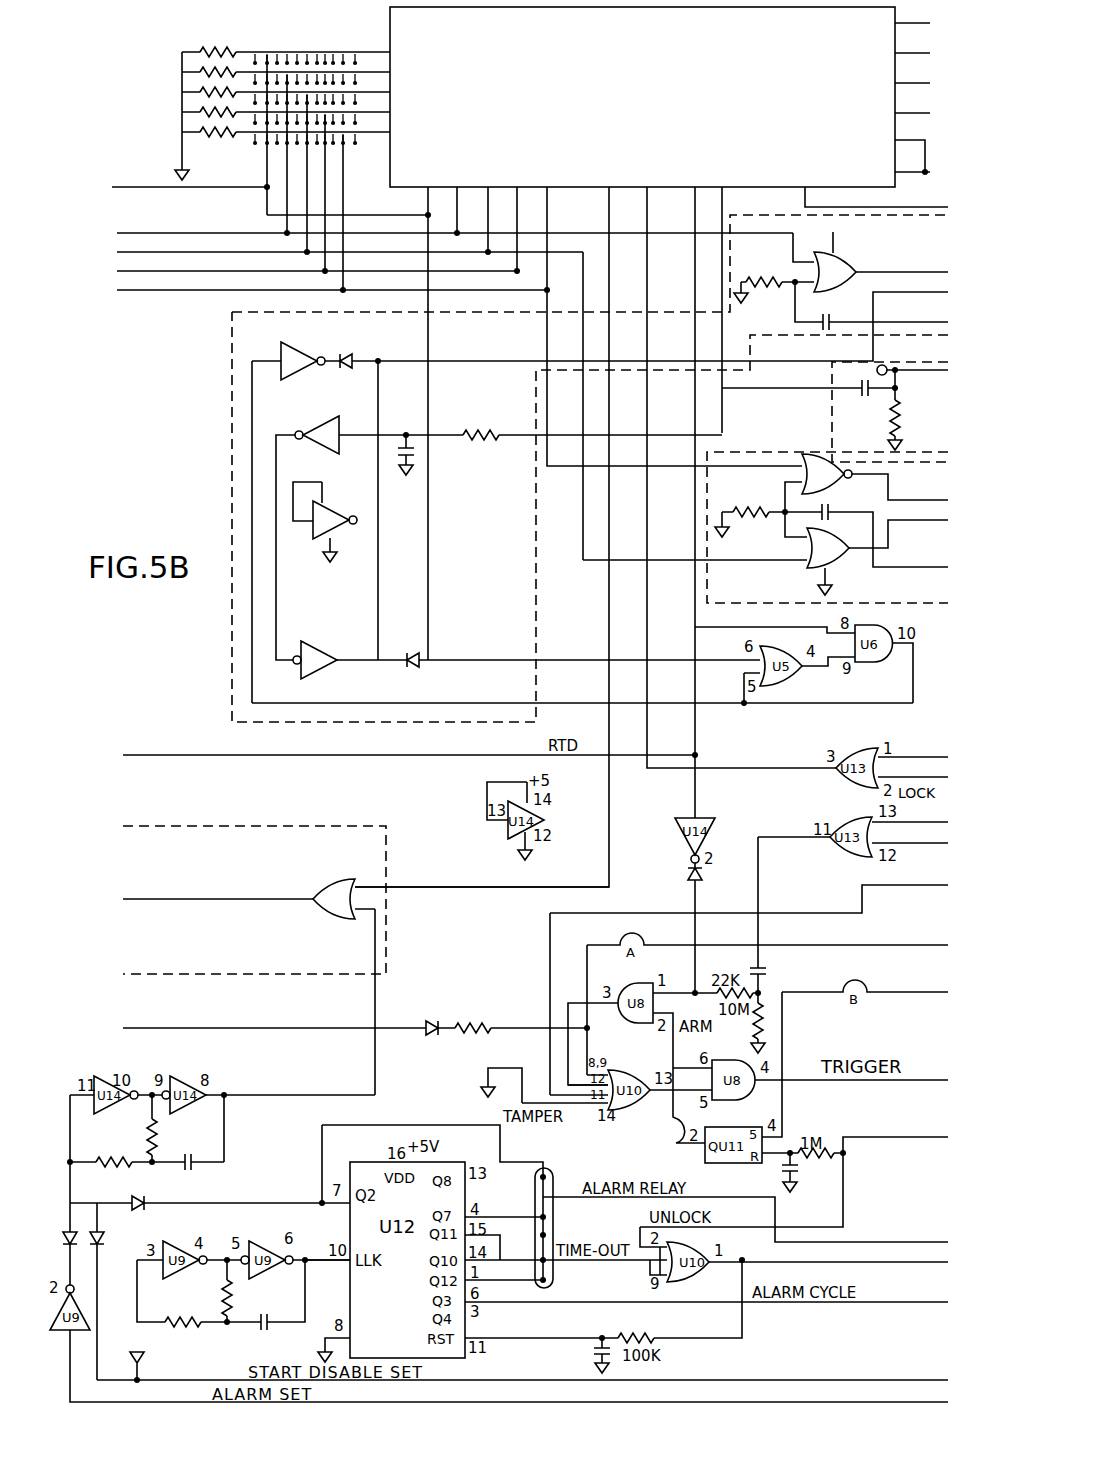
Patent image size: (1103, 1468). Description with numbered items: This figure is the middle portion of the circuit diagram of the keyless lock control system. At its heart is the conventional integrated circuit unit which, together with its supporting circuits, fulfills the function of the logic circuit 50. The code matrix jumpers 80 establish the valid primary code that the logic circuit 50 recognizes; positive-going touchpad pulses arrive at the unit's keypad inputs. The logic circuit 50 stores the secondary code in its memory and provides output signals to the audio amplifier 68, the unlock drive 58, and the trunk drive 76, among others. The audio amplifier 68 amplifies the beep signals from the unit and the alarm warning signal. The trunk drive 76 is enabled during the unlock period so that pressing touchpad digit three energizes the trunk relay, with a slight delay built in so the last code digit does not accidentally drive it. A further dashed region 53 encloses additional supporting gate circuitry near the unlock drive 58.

The code matrix jumpers 80 is at (243, 52).
The logic circuit 50 is at (552, 8).
The trunk drive 76 is at (232, 450).
The unlock drive 58 is at (832, 430).
The timer circuit 53 is at (731, 452).
The audio amplifier 68 is at (322, 826).